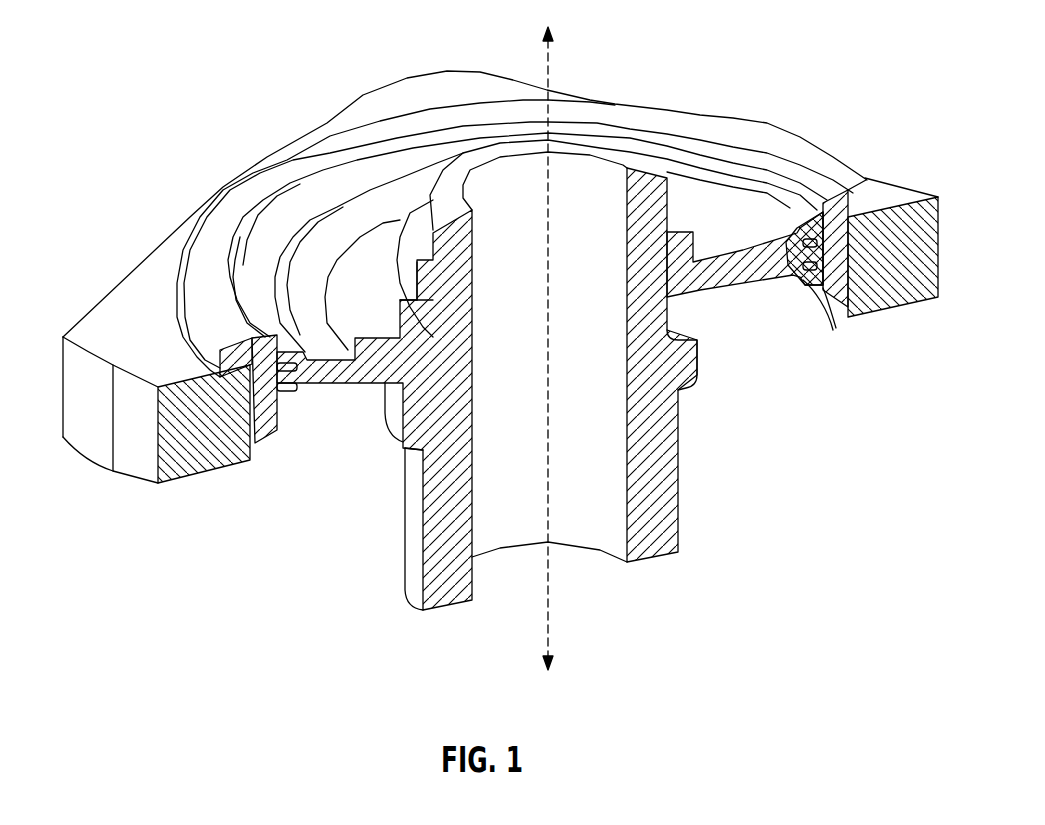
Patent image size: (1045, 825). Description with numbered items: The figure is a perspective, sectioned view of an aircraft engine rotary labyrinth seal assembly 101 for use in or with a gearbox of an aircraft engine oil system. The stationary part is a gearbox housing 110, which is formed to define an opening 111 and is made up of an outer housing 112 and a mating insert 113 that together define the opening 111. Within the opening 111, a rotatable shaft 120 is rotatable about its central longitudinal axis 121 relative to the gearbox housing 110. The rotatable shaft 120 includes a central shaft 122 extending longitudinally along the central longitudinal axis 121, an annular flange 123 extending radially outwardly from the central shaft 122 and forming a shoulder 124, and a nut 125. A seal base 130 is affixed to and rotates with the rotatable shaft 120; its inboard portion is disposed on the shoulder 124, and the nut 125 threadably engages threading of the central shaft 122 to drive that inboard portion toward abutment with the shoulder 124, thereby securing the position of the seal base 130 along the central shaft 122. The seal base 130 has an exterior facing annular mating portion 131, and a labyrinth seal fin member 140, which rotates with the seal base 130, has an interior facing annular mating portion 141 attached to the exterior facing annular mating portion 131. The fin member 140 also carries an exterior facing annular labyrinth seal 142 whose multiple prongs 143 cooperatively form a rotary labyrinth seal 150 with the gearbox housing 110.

The aircraft engine rotary labyrinth seal assembly 101 is at (386, 34).
The gearbox housing 110 is at (457, 71).
The opening 111 is at (783, 342).
The outer housing 112 is at (110, 298).
The mating insert 113 is at (222, 188).
The rotatable shaft 120 is at (443, 598).
The central longitudinal axis 121 is at (550, 600).
The central shaft 122 is at (597, 150).
The annular flange 123 is at (697, 365).
The shoulder 124 is at (413, 430).
The nut 125 is at (393, 193).
The seal base 130 is at (781, 215).
The exterior facing annular mating portion 131 is at (322, 268).
The labyrinth seal fin member 140 is at (805, 200).
The interior facing annular mating portion 141 is at (253, 290).
The exterior facing annular labyrinth seal 142 is at (250, 292).
The prongs 143 is at (826, 284).
The rotary labyrinth seal 150 is at (285, 416).